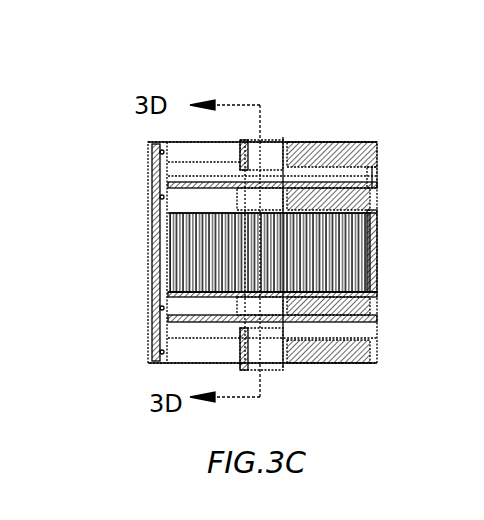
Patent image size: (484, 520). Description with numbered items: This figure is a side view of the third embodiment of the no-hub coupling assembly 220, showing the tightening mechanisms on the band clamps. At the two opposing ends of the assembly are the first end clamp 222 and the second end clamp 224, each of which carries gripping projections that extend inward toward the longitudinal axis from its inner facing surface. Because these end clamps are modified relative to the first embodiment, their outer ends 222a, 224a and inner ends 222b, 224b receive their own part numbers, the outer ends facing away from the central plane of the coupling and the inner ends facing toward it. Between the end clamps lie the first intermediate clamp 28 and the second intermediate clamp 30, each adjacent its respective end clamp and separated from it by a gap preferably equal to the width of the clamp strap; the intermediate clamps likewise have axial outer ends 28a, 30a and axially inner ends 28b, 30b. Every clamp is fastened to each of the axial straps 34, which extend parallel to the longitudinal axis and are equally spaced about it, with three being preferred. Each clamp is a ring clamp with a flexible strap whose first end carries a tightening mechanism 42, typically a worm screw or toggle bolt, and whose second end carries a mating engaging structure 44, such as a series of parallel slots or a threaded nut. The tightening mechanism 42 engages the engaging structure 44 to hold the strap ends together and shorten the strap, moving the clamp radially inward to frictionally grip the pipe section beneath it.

The no-hub coupling assembly 220 is at (337, 22).
The tightening mechanism 42 is at (272, 148).
The engaging structure 44 is at (327, 147).
The axial strap 34 is at (367, 173).
The first intermediate clamp 28 is at (147, 207).
The axial outer end of first intermediate clamp 28a is at (370, 183).
The axially inner end of first intermediate clamp 28b is at (373, 213).
The second intermediate clamp 30 is at (147, 303).
The axial outer end of second intermediate clamp 30a is at (370, 320).
The axially inner end of second intermediate clamp 30b is at (372, 295).
The first end clamp 222 is at (145, 153).
The outer end of first end clamp 222a is at (145, 145).
The inner end of first end clamp 222b is at (147, 170).
The second end clamp 224 is at (375, 352).
The outer end of second end clamp 224a is at (147, 350).
The inner end of second end clamp 224b is at (147, 342).